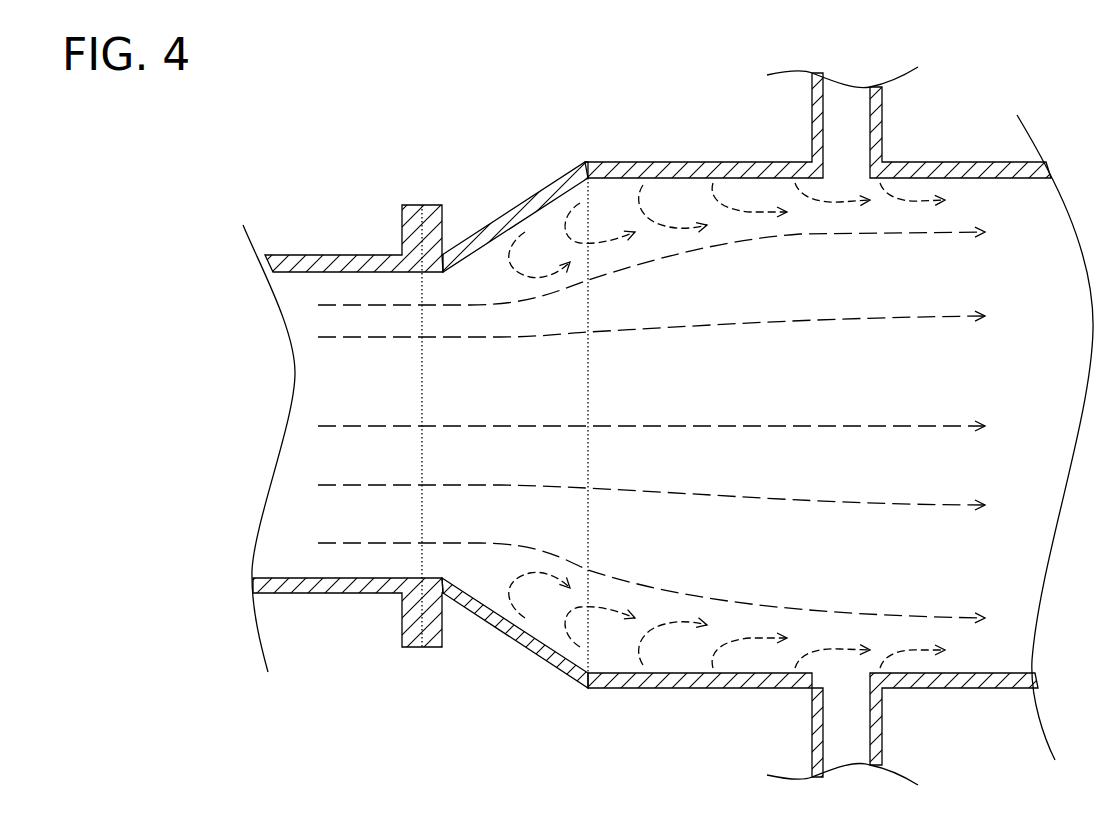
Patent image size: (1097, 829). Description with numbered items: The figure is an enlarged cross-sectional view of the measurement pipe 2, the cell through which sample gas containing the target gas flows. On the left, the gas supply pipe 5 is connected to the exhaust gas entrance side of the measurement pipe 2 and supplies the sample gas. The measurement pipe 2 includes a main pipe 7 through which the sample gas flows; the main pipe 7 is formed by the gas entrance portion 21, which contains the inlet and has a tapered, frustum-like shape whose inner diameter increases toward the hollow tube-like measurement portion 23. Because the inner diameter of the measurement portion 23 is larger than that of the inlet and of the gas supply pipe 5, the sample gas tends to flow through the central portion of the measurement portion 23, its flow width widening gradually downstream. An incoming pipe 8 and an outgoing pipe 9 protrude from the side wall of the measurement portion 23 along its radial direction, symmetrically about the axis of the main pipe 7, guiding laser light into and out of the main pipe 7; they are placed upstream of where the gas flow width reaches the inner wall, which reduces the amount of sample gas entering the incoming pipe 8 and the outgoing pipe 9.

The measurement pipe 2 is at (594, 119).
The gas supply pipe 5 is at (298, 593).
The main pipe 7 is at (702, 170).
The incoming pipe 8 is at (882, 132).
The outgoing pipe 9 is at (882, 717).
The gas entrance portion 21 is at (535, 650).
The measurement portion 23 is at (690, 687).